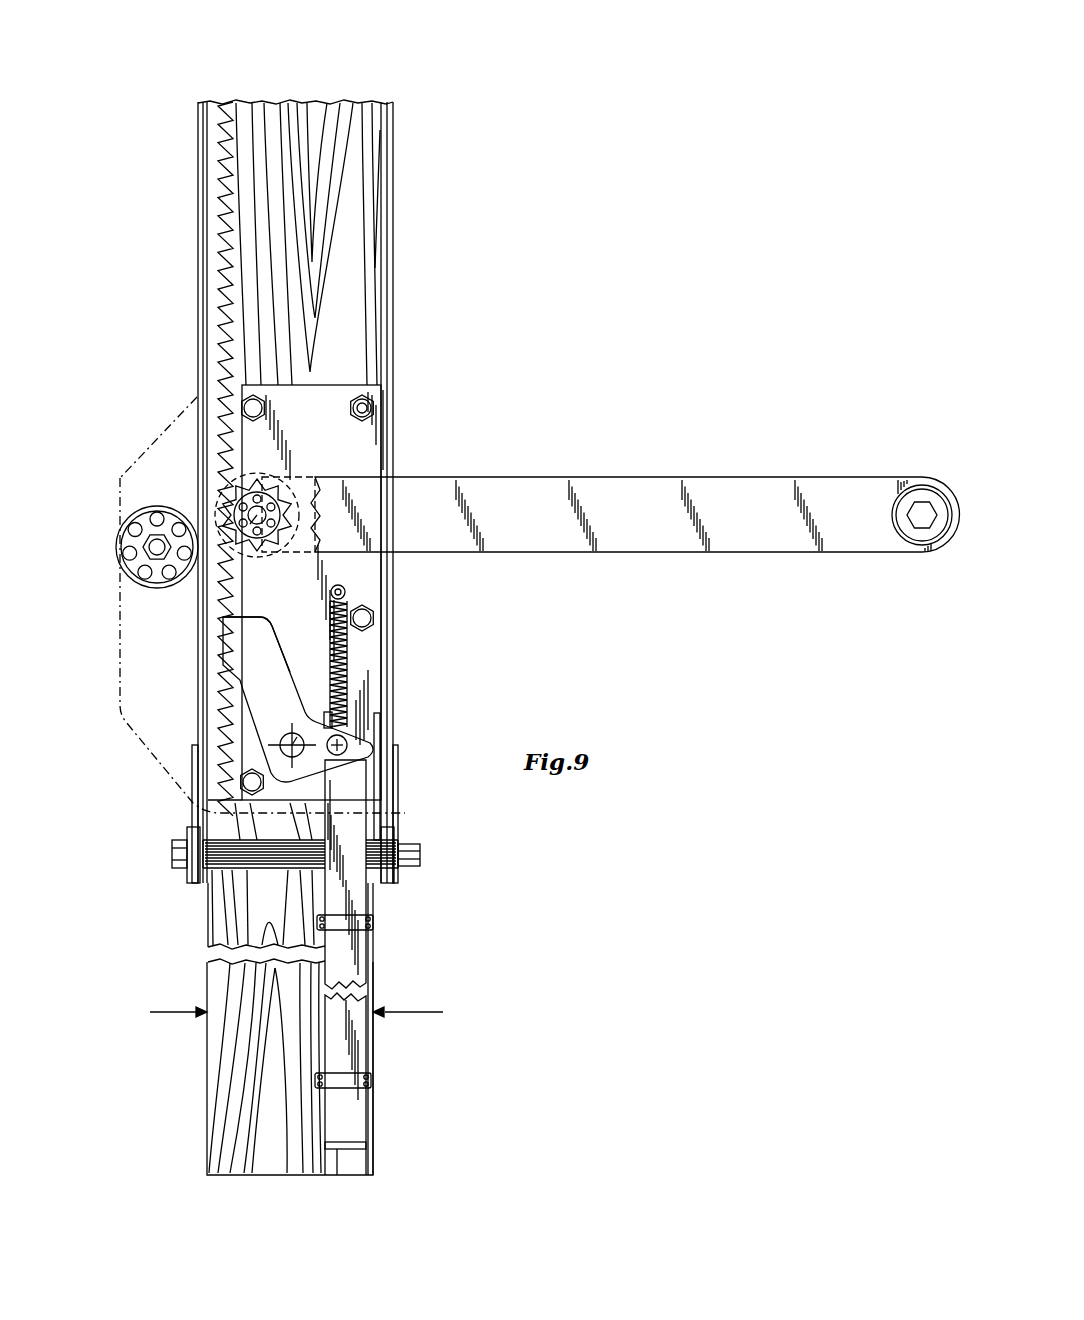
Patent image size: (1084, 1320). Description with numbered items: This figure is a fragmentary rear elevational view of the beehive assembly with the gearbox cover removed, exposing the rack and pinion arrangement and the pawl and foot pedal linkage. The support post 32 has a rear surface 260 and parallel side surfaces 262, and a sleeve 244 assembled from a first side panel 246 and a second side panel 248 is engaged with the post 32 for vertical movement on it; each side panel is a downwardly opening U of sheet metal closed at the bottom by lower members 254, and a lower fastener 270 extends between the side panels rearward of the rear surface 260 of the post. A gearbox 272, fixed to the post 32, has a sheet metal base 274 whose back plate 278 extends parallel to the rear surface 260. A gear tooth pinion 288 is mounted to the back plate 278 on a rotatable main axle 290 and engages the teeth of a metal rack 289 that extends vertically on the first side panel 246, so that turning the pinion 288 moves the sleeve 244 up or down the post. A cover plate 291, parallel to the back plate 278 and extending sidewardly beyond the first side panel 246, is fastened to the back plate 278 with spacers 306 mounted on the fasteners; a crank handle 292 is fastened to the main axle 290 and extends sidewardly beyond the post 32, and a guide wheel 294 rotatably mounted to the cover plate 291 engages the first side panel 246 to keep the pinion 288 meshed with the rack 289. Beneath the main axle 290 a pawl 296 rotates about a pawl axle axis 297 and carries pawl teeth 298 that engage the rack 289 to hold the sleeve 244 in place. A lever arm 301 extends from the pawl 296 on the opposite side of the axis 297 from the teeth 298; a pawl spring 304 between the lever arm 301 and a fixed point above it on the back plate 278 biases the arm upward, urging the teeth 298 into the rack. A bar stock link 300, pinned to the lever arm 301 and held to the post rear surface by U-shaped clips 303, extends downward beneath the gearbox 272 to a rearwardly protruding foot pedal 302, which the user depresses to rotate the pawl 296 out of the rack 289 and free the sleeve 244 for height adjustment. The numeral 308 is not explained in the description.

The post 32 is at (207, 1128).
The sleeve 244 is at (395, 182).
The first side panel 246 is at (198, 151).
The second side panel 248 is at (395, 300).
The lower members 254 is at (190, 816).
The rear surface 260 is at (208, 934).
The side surfaces 262 is at (291, 1007).
The lower fastener 270 is at (240, 869).
The gearbox 272 is at (146, 414).
The sheet metal base 274 is at (386, 437).
The back plate 278 is at (334, 432).
The gear tooth pinion 288 is at (248, 473).
The metal rack 289 is at (237, 152).
The main axle 290 is at (238, 498).
The cover plate 291 is at (118, 607).
The crank handle 292 is at (668, 553).
The guide wheel 294 is at (134, 518).
The pawl 296 is at (262, 700).
The pawl axle axis 297 is at (293, 733).
The pawl teeth 298 is at (228, 638).
The bar stock link 300 is at (366, 972).
The lever arm 301 is at (356, 754).
The foot pedal 302 is at (350, 1145).
The U-shaped clips 303 is at (373, 922).
The pawl spring 304 is at (366, 658).
The spacers 306 is at (244, 394).
The bolt 308 is at (372, 409).